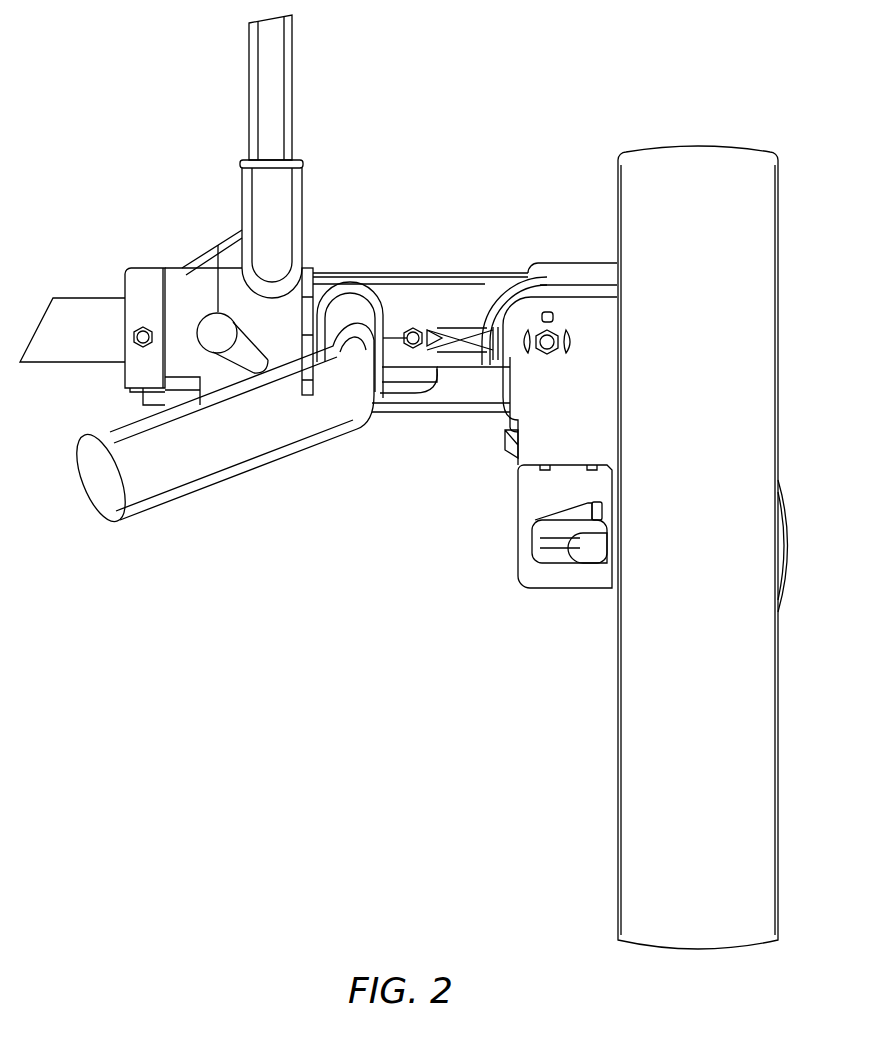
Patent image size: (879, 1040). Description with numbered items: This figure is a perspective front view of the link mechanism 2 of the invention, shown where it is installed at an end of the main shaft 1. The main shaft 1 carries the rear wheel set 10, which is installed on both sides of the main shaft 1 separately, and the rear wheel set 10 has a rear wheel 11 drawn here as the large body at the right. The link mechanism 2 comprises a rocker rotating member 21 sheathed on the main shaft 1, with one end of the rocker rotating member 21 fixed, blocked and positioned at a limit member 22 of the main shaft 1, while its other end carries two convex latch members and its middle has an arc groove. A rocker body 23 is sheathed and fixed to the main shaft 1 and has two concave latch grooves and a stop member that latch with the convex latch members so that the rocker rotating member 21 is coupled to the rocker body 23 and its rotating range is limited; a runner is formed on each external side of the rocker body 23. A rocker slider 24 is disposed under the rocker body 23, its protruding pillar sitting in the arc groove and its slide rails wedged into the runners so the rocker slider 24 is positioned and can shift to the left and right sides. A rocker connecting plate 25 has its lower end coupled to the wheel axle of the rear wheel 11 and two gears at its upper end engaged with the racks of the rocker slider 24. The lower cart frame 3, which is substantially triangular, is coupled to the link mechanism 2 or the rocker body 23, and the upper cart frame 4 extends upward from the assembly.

The main shaft 1 is at (88, 318).
The link mechanism 2 is at (461, 250).
The lower cart frame 3 is at (175, 462).
The upper cart frame 4 is at (272, 95).
The rear wheel set 10 is at (590, 690).
The rear wheel 11 is at (672, 847).
The rocker rotating member 21 is at (262, 322).
The limit member 22 is at (147, 290).
The rocker body 23 is at (393, 297).
The rocker slider 24 is at (445, 390).
The rocker connecting plate 25 is at (538, 577).